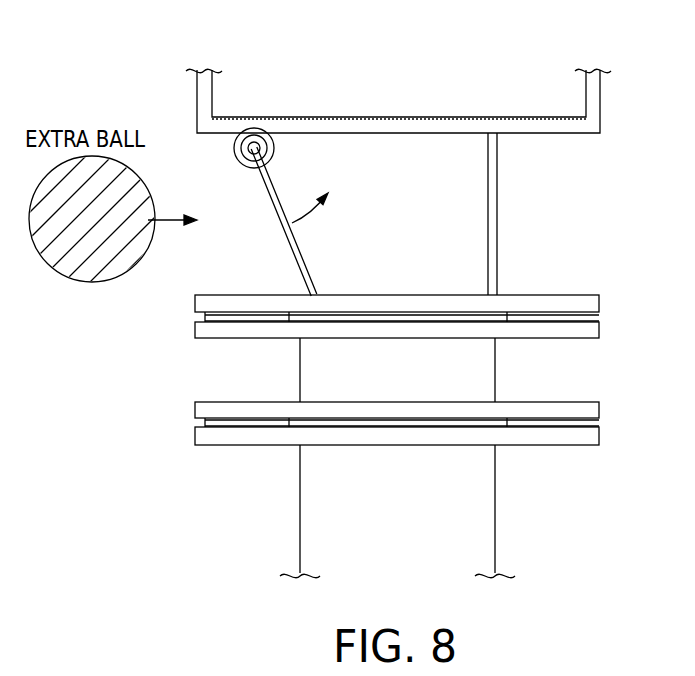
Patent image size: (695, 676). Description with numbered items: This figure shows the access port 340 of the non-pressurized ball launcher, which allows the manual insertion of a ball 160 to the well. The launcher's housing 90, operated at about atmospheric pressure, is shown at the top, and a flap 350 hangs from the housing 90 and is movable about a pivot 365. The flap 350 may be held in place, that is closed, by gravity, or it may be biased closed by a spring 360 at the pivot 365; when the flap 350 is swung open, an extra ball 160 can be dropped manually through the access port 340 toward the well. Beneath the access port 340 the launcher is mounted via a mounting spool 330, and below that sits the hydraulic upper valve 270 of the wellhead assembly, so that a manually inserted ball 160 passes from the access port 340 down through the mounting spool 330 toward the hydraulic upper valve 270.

The housing 90 is at (600, 93).
The ball 160 is at (112, 230).
The hydraulic upper valve 270 is at (592, 437).
The mounting spool 330 is at (592, 331).
The access port 340 is at (258, 258).
The flap 350 is at (302, 274).
The spring 360 is at (233, 147).
The pivot 365 is at (236, 160).